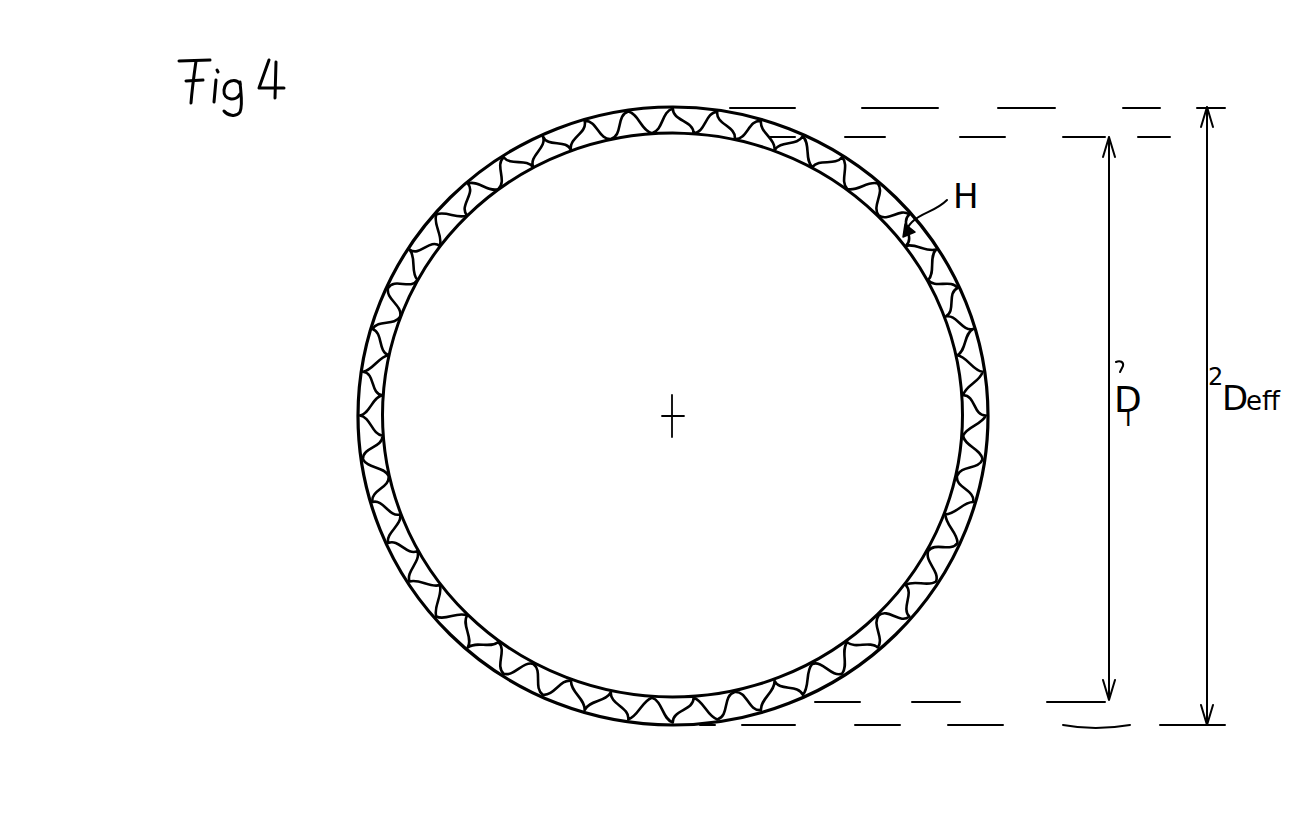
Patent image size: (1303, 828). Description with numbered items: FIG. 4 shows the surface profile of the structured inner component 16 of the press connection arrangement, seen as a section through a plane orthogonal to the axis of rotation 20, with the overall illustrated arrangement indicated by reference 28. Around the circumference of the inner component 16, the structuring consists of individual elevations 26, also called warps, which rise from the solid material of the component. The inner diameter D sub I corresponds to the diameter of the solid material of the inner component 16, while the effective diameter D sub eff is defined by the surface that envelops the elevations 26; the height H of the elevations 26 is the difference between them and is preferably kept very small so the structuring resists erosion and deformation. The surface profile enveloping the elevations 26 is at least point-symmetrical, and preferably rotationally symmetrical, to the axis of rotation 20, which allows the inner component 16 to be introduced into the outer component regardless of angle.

The tubular insulation structure 28 is at (400, 190).
The elevations 26 is at (505, 160).
The inner component 16 is at (699, 180).
The axis of rotation 20 is at (676, 412).